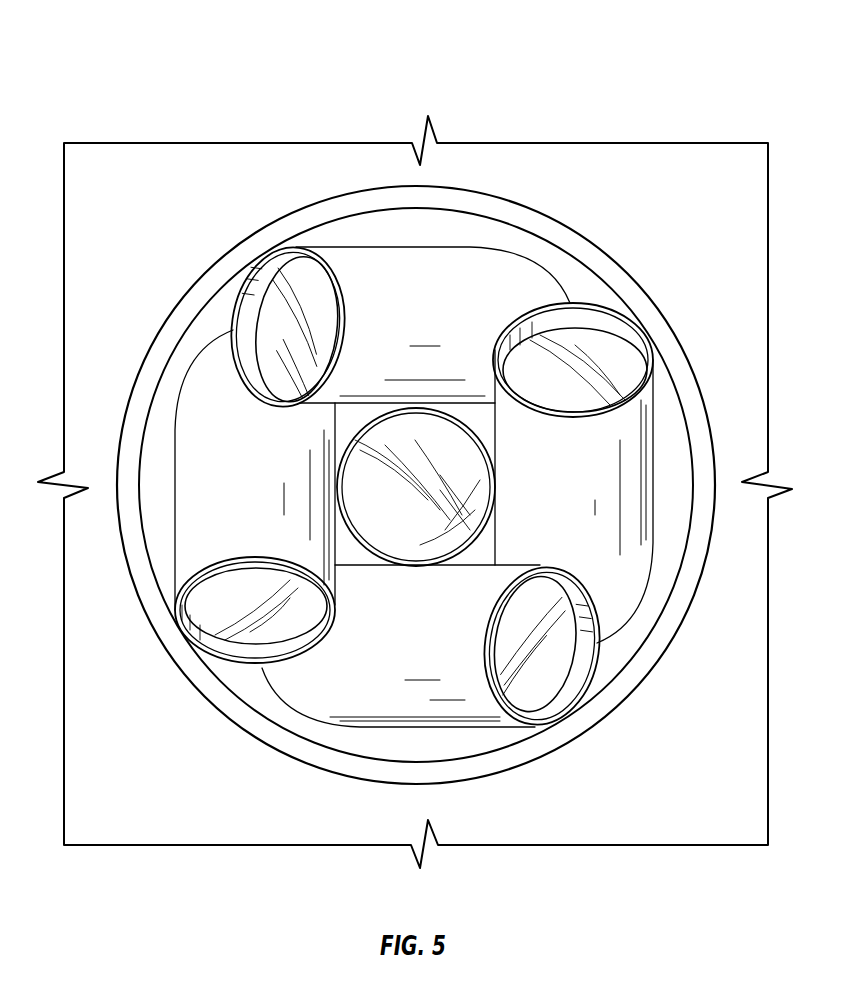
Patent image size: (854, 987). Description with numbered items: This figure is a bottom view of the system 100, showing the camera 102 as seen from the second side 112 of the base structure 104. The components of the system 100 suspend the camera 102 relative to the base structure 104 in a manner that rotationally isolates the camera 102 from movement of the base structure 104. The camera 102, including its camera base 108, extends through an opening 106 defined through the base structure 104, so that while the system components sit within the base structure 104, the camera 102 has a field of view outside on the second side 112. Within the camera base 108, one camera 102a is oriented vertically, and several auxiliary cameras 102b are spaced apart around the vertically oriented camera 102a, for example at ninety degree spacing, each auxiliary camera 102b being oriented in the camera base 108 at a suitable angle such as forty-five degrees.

The system 100 is at (401, 451).
The camera 102 is at (412, 485).
The vertically oriented camera 102a is at (427, 511).
The auxiliary cameras 102b is at (338, 248).
The base structure 104 is at (58, 247).
The opening 106 is at (323, 763).
The camera base 108 is at (265, 708).
The second side 112 is at (92, 767).